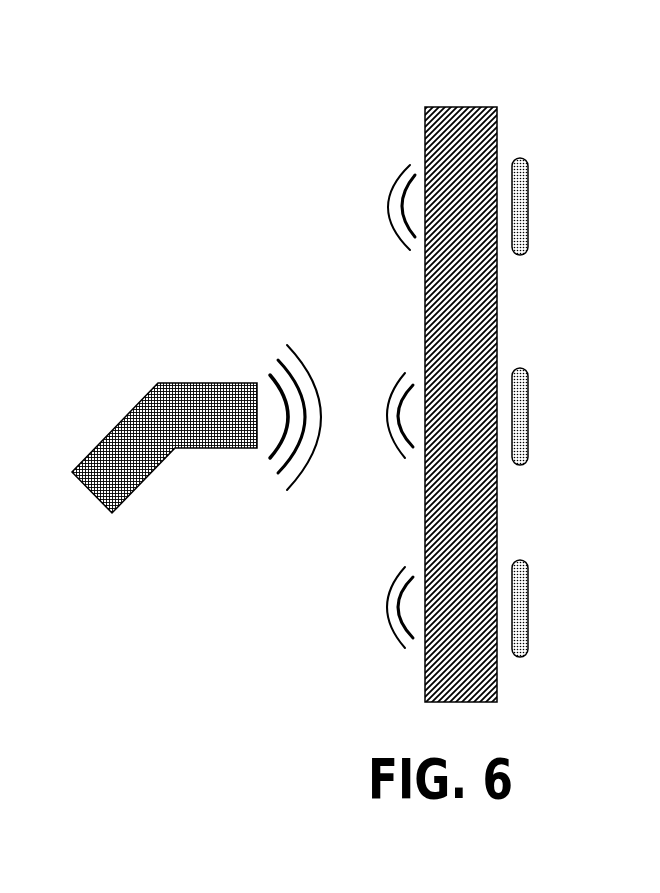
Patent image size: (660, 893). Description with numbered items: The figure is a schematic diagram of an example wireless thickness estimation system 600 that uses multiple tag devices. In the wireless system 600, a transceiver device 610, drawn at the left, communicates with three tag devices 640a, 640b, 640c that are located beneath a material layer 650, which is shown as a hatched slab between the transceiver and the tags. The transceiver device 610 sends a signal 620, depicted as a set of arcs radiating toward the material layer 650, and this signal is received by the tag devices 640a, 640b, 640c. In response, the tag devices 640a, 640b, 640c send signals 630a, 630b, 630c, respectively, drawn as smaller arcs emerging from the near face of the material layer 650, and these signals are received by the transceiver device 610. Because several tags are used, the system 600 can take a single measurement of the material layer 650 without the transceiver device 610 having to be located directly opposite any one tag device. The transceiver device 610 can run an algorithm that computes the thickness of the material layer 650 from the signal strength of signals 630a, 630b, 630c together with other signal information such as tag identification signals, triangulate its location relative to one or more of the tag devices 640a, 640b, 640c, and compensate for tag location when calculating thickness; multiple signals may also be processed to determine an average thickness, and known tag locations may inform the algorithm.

The wireless thickness estimation system 600 is at (288, 66).
The transceiver device 610 is at (95, 445).
The signal 620 is at (306, 326).
The signal 630a is at (383, 258).
The signal 630b is at (378, 451).
The signal 630c is at (378, 644).
The tag device 640a is at (520, 158).
The tag device 640b is at (520, 368).
The tag device 640c is at (520, 560).
The material layer 650 is at (425, 125).